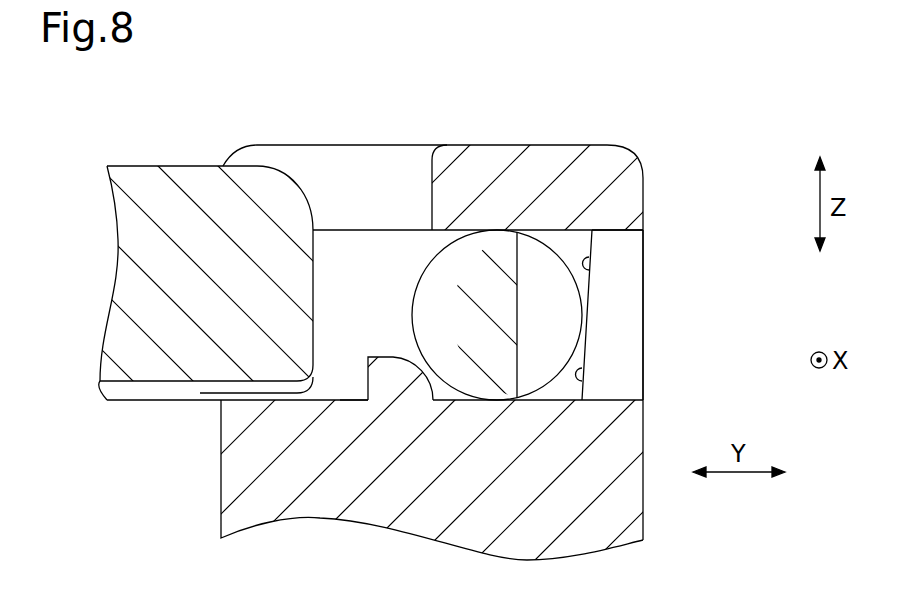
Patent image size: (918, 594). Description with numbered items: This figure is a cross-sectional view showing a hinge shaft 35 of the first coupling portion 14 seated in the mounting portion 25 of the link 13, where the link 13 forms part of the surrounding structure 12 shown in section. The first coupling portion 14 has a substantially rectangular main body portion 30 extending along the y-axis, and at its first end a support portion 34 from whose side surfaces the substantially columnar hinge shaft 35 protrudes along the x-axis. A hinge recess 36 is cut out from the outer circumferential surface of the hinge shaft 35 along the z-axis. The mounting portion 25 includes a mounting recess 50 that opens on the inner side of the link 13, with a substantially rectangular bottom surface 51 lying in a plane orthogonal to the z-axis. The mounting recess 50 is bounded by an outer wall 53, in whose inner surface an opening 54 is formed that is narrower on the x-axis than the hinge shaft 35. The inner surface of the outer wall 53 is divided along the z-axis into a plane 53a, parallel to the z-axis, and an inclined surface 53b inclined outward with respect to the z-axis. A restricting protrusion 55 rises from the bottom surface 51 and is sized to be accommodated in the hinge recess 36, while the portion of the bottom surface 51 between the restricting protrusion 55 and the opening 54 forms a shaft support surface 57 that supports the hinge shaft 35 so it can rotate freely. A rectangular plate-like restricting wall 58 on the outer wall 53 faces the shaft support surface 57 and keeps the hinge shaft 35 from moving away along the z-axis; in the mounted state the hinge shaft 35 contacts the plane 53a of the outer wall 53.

The first coupling portion 14 is at (134, 166).
The main body portion 30 is at (197, 166).
The mounting portion 25 is at (390, 135).
The restricting wall 58 is at (483, 157).
The cover 12 is at (552, 145).
The link 13 is at (595, 146).
The support portion 34 is at (363, 247).
The hinge recess 36 is at (517, 325).
The outer wall 53 is at (635, 315).
The opening 54 is at (633, 232).
The inclined surface 53b is at (592, 272).
The plane 53a is at (585, 375).
The shaft support surface 57 is at (556, 395).
The hinge shaft 35 is at (470, 382).
The restricting protrusion 55 is at (383, 357).
The mounting recess 50 is at (315, 400).
The bottom surface 51 is at (348, 400).